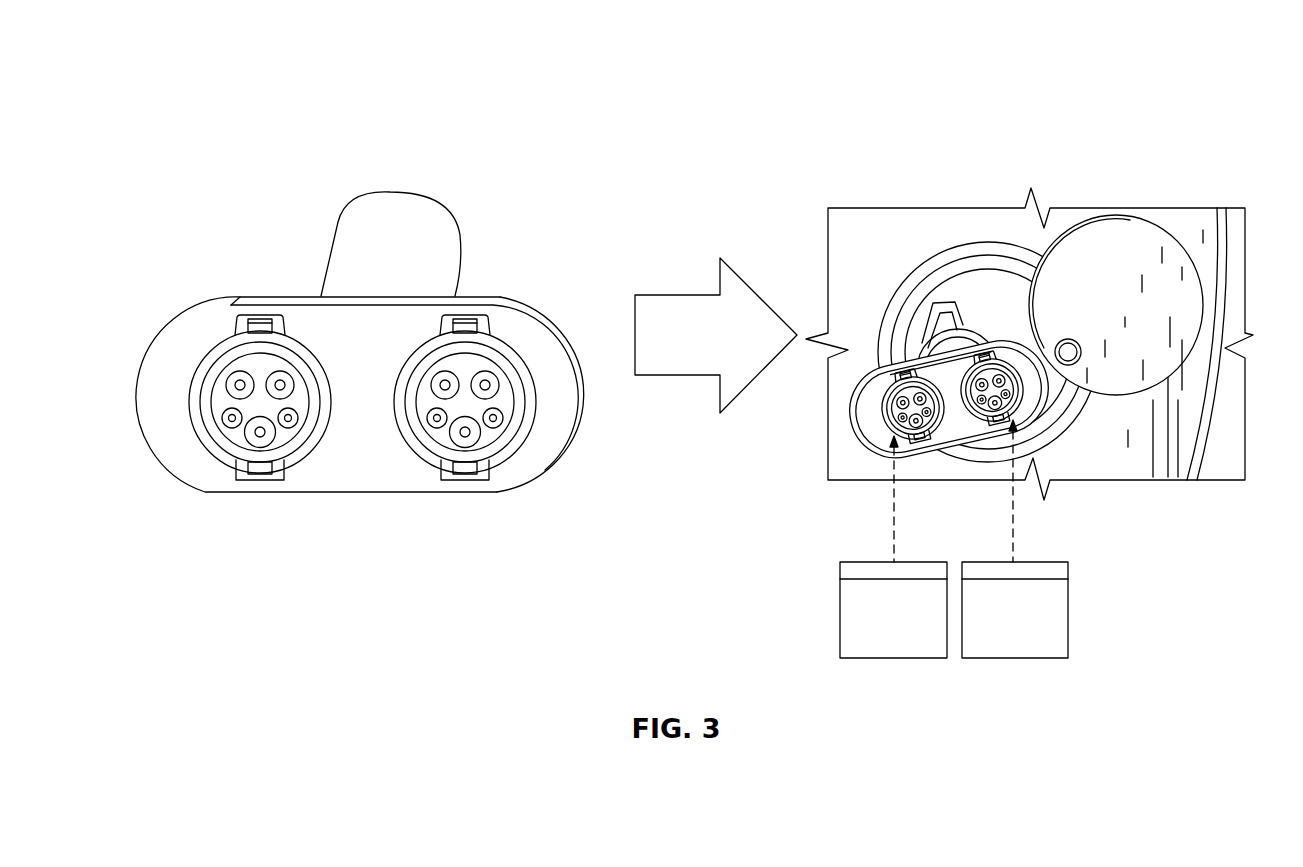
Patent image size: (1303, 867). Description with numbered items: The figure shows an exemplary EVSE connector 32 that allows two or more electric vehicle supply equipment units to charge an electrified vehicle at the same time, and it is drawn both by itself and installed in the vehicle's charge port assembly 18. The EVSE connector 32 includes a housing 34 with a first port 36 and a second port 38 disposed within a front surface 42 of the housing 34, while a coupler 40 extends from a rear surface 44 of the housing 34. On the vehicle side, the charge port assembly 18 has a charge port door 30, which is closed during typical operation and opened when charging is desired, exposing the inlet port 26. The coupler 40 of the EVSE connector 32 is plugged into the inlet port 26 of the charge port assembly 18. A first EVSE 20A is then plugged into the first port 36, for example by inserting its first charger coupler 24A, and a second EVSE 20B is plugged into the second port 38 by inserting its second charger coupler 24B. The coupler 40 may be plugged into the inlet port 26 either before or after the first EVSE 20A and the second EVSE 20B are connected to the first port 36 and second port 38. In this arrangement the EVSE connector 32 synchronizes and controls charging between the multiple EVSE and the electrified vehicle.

The charge port assembly 18 is at (968, 263).
The first EVSE 20A is at (846, 632).
The second EVSE 20B is at (1062, 617).
The first charger coupler 24A is at (846, 572).
The second charger coupler 24B is at (1062, 570).
The inlet port 26 is at (955, 340).
The charge port door 30 is at (1150, 242).
The EVSE connector 32 is at (226, 186).
The housing 34 is at (598, 428).
The first port 36 is at (240, 440).
The second port 38 is at (445, 440).
The coupler 40 is at (443, 232).
The front surface 42 is at (338, 470).
The rear surface 44 is at (528, 298).